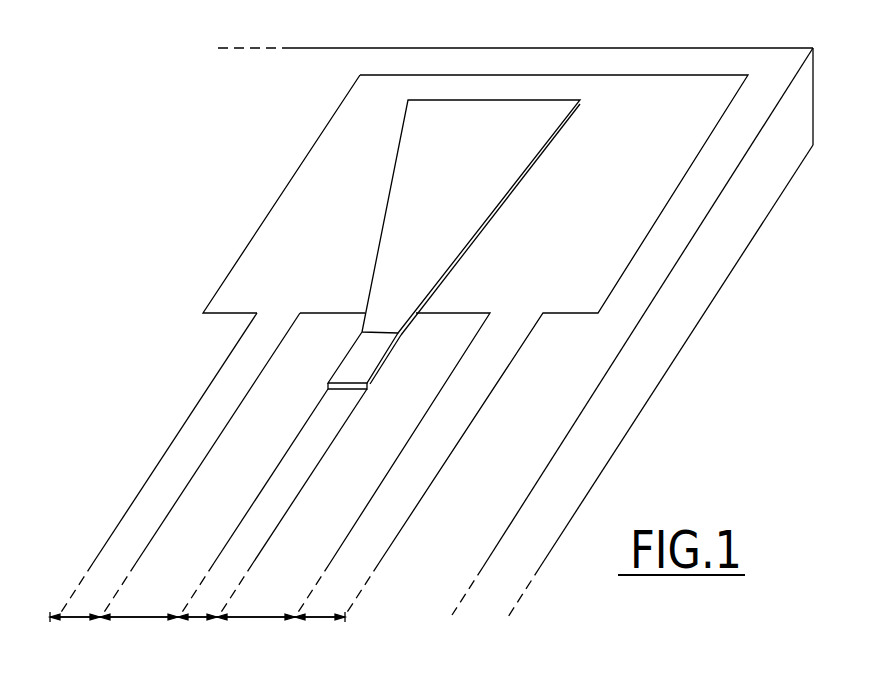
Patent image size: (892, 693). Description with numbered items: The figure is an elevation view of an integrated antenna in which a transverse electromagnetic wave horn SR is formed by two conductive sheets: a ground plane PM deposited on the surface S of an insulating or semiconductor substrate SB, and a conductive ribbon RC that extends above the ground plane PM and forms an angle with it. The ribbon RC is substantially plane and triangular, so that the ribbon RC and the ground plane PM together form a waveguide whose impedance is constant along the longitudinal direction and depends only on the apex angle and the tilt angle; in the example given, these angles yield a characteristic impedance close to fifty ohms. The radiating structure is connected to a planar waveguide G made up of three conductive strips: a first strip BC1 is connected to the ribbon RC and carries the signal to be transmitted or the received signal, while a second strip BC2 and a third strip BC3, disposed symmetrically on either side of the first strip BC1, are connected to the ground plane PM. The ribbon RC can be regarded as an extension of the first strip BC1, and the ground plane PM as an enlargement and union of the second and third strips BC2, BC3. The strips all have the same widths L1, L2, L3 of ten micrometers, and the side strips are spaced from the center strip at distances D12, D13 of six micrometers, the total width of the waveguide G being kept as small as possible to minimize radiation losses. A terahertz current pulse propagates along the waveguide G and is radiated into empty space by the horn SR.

The surface S is at (632, 302).
The ground plane PM is at (663, 97).
The horn SR is at (247, 232).
The conductive ribbon RC is at (408, 198).
The planar waveguide G is at (187, 408).
The first strip BC1 is at (290, 472).
The second strip BC2 is at (167, 458).
The third strip BC3 is at (447, 445).
The substrate SB is at (610, 433).
The width of first strip L1 is at (197, 639).
The width of second strip L2 is at (75, 639).
The width of third strip L3 is at (320, 639).
The spacing between first and second strips D12 is at (139, 639).
The spacing between first and third strips D13 is at (256, 639).